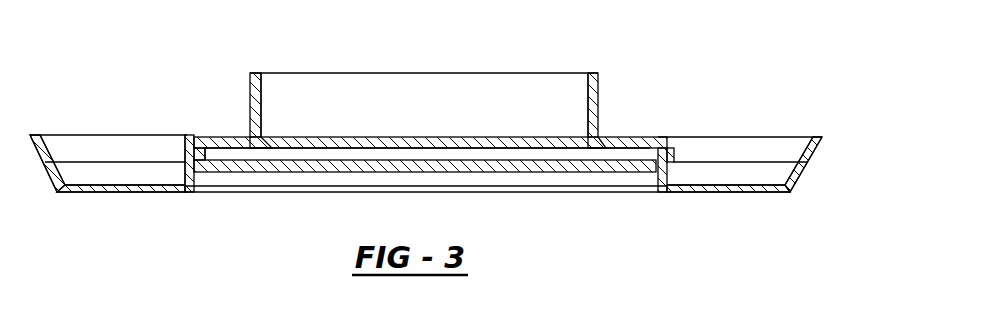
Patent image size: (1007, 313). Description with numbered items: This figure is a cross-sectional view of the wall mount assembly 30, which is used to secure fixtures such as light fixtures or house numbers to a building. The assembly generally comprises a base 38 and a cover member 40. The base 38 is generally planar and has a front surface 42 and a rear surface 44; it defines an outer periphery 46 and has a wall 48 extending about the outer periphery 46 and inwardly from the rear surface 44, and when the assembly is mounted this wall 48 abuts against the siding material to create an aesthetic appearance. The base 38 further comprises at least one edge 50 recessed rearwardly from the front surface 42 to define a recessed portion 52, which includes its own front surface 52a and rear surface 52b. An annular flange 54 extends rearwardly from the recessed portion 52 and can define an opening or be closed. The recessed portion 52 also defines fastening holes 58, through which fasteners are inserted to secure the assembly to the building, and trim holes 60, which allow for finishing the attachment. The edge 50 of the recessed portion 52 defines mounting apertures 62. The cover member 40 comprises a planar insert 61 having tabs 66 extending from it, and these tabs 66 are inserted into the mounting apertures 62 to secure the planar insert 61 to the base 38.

The wall mount assembly 30 is at (843, 147).
The base 38 is at (760, 170).
The cover member 40 is at (615, 172).
The front surface 42 is at (110, 193).
The rear surface 44 is at (98, 185).
The outer periphery 46 is at (788, 193).
The wall 48 is at (822, 150).
The edge 50 is at (182, 155).
The recessed portion 52 is at (208, 133).
The front surface 52a is at (210, 150).
The rear surface 52b is at (440, 136).
The annular flange 54 is at (598, 103).
The fastening holes 58 is at (243, 138).
The trim holes 60 is at (290, 138).
The planar insert 61 is at (280, 172).
The mounting apertures 62 is at (667, 157).
The tabs 66 is at (673, 153).